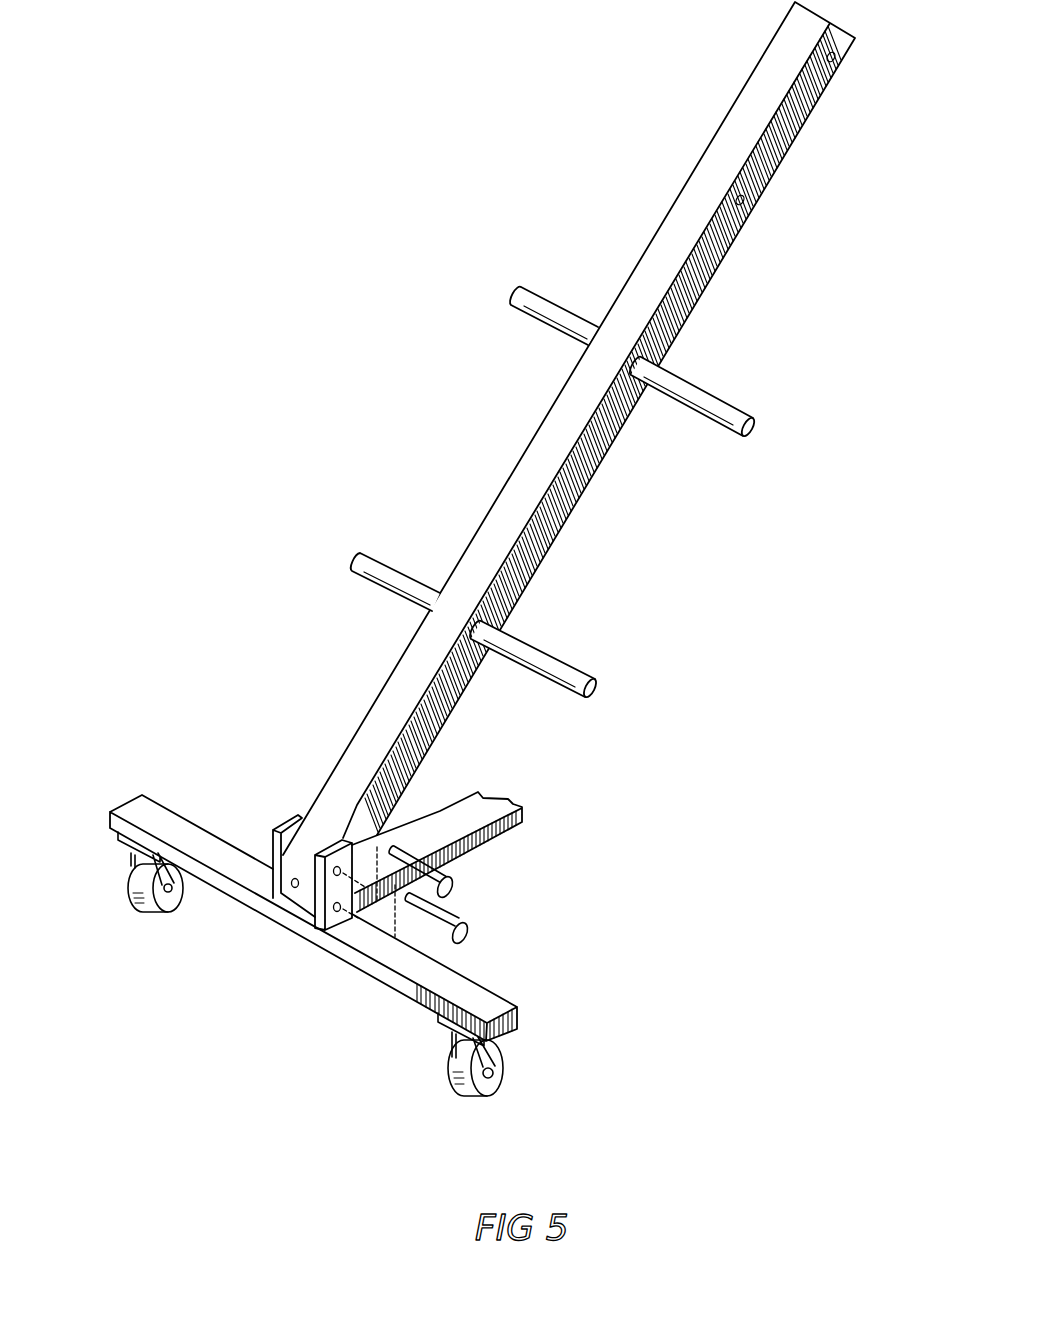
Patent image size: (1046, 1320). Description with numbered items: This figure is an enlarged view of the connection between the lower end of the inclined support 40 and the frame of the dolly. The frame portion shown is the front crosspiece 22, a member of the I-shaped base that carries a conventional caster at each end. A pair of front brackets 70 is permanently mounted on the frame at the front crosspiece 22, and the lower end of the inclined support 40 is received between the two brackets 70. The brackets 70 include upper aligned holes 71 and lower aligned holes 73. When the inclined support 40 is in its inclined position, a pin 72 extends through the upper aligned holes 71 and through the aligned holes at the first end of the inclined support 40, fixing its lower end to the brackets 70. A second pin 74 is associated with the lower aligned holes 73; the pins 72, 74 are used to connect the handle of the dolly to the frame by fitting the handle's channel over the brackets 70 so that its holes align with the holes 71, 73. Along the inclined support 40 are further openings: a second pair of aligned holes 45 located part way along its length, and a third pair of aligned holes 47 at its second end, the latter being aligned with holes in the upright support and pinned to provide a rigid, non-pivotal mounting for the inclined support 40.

The front crosspiece 22 is at (142, 805).
The inclined support 40 is at (518, 465).
The second pair of aligned holes 45 is at (738, 196).
The third pair of aligned holes 47 is at (832, 61).
The front brackets 70 is at (300, 815).
The upper aligned holes 71 is at (337, 866).
The pin 72 is at (452, 879).
The lower aligned holes 73 is at (310, 877).
The pin 74 is at (470, 935).